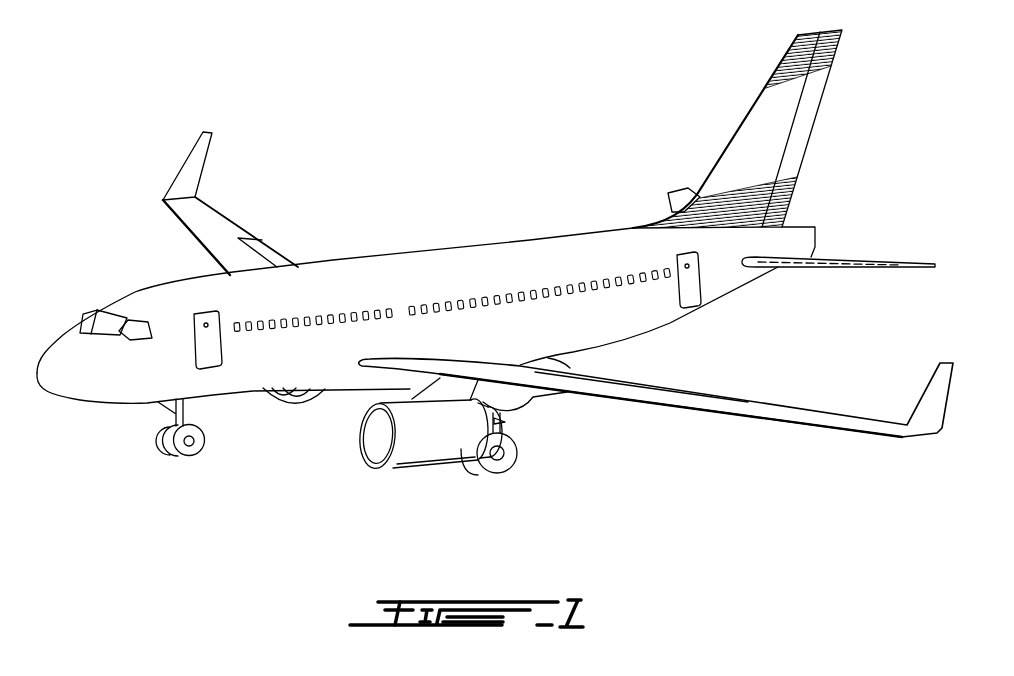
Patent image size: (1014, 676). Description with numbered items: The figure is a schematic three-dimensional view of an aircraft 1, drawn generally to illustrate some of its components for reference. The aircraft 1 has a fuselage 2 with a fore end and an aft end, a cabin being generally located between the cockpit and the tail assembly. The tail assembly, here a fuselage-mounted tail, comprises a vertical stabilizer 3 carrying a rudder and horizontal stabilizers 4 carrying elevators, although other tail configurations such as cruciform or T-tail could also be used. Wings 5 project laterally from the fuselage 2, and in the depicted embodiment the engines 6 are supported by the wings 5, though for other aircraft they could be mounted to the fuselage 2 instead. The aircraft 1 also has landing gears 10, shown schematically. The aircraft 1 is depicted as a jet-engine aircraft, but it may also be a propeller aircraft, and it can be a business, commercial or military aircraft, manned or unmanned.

The aircraft 1 is at (409, 198).
The fuselage 2 is at (247, 377).
The vertical stabilizer 3 is at (760, 127).
The horizontal stabilizers 4 is at (680, 199).
The wings 5 is at (220, 233).
The engines 6 is at (433, 443).
The landing gears 10 is at (184, 470).